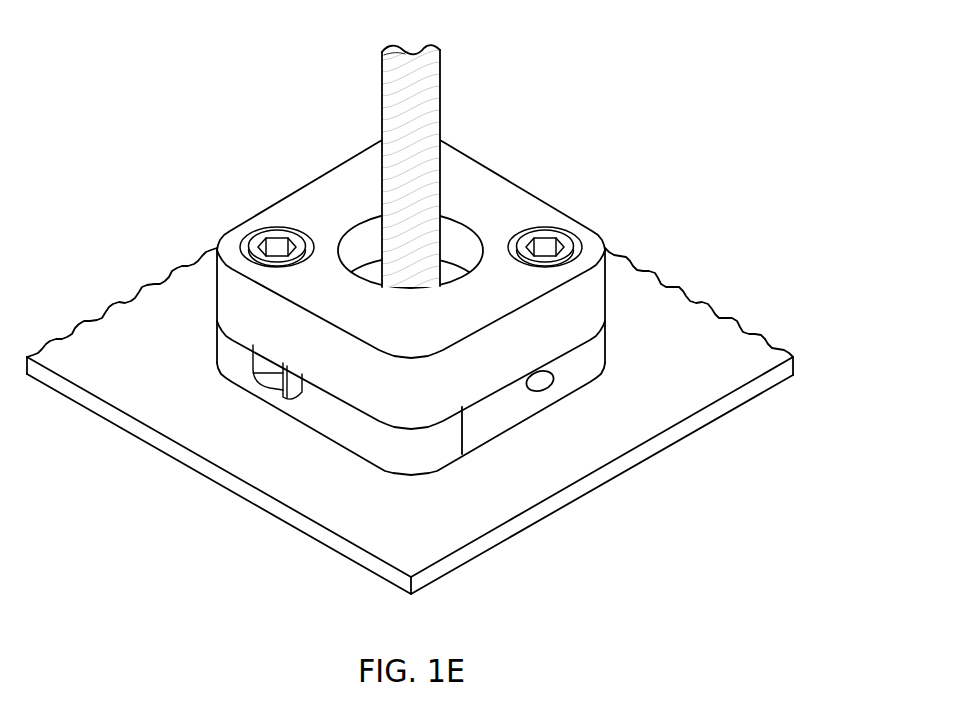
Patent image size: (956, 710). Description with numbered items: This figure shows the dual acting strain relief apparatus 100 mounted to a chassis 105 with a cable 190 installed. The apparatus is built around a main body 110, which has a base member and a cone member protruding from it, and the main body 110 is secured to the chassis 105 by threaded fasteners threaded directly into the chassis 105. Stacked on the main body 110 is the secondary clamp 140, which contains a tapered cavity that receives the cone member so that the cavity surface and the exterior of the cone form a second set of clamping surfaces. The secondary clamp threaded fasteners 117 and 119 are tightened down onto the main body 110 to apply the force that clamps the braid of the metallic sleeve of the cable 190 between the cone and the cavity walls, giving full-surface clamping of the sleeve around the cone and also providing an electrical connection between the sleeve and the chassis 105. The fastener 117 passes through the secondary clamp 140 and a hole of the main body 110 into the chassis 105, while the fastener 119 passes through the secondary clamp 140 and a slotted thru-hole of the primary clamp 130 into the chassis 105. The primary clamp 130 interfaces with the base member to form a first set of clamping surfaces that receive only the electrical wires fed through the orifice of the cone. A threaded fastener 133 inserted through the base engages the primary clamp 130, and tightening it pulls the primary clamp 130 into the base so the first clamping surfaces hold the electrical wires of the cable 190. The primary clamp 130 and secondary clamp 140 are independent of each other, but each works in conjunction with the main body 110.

The dual acting strain relief apparatus 100 is at (410, 316).
The chassis 105 is at (453, 533).
The main body 110 is at (359, 339).
The threaded fastener 117 is at (252, 243).
The threaded fastener 119 is at (568, 246).
The primary clamp 130 is at (606, 360).
The threaded fastener 133 is at (277, 382).
The secondary clamp 140 is at (363, 246).
The cable 190 is at (385, 95).